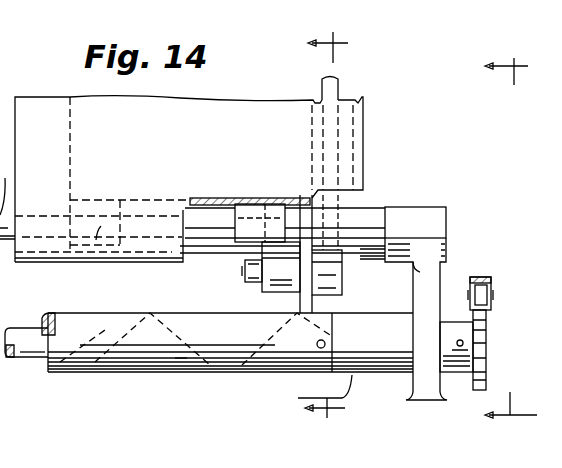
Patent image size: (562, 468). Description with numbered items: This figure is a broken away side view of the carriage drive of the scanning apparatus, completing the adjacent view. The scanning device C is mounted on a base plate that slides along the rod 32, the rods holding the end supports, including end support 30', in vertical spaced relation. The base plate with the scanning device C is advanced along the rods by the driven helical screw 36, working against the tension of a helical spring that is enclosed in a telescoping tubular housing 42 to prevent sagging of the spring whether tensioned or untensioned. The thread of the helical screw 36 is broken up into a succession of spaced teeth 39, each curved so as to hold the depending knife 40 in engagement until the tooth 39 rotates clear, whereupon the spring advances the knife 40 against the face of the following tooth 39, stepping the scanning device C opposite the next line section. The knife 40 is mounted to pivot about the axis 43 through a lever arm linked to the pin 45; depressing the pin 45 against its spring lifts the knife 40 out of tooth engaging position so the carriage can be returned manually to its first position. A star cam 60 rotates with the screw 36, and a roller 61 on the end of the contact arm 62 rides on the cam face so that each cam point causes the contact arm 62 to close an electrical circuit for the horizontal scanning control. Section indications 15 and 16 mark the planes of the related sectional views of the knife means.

The scanning device C is at (228, 107).
The pin 45 is at (340, 84).
The rod 32 is at (362, 215).
The telescoping tubular housing 42 is at (208, 254).
The axis 43 is at (342, 275).
The knife 40 is at (318, 300).
The end support 30' is at (449, 303).
The helical screw 36 is at (185, 360).
The tooth 39 is at (130, 328).
The star cam 60 is at (487, 338).
The contact arm 62 is at (480, 278).
The roller 61 is at (483, 293).
The section line 16- 16 is at (318, 223).
The section line 15- 15 is at (500, 239).